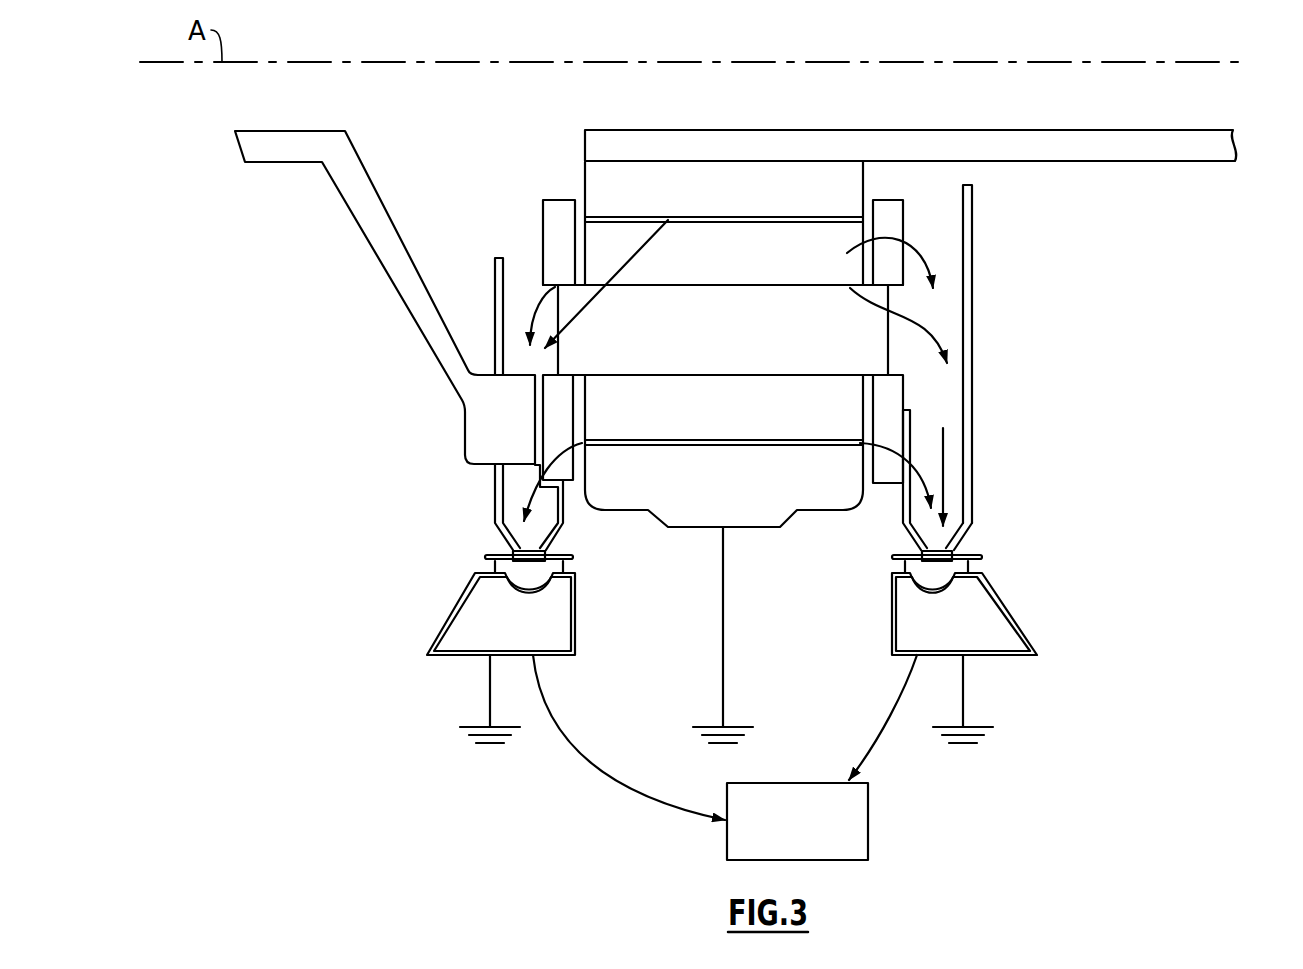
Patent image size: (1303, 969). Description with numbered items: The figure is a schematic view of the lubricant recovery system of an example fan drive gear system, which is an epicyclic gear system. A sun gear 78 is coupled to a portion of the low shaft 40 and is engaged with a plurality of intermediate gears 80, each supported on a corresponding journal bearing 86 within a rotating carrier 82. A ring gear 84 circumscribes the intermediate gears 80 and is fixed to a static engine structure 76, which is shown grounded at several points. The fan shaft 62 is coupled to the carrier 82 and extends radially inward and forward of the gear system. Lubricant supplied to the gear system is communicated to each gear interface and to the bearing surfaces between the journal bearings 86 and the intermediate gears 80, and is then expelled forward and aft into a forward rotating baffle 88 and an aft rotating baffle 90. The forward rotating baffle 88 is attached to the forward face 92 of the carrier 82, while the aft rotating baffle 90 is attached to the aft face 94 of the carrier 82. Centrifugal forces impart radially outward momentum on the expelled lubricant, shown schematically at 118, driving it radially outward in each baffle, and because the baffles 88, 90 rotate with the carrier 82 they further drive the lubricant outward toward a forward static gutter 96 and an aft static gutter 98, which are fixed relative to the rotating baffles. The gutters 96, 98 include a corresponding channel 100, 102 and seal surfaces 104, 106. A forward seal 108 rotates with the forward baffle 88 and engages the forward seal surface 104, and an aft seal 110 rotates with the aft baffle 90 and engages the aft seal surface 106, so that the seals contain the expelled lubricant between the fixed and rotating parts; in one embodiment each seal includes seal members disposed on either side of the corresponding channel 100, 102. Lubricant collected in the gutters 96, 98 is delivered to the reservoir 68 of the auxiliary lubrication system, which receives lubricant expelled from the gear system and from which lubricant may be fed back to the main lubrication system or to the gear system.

The low shaft 40 is at (985, 137).
The fan shaft 62 is at (377, 247).
The reservoir 68 is at (727, 838).
The static engine structure 76 is at (465, 733).
The sun gear 78 is at (852, 190).
The intermediate gears 80 is at (862, 222).
The carrier 82 is at (900, 208).
The ring gear 84 is at (707, 500).
The journal bearing 86 is at (860, 318).
The forward rotating baffle 88 is at (495, 508).
The aft rotating baffle 90 is at (967, 470).
The forward face 92 is at (540, 443).
The aft face 94 is at (907, 385).
The forward static gutter 96 is at (490, 584).
The aft static gutter 98 is at (978, 584).
The channel 100 is at (512, 591).
The channel 102 is at (924, 599).
The forward seal surface 104 is at (578, 569).
The aft seal surface 106 is at (991, 571).
The forward seal 108 is at (479, 565).
The aft seal 110 is at (892, 563).
The expelled lubricant 118 is at (580, 312).